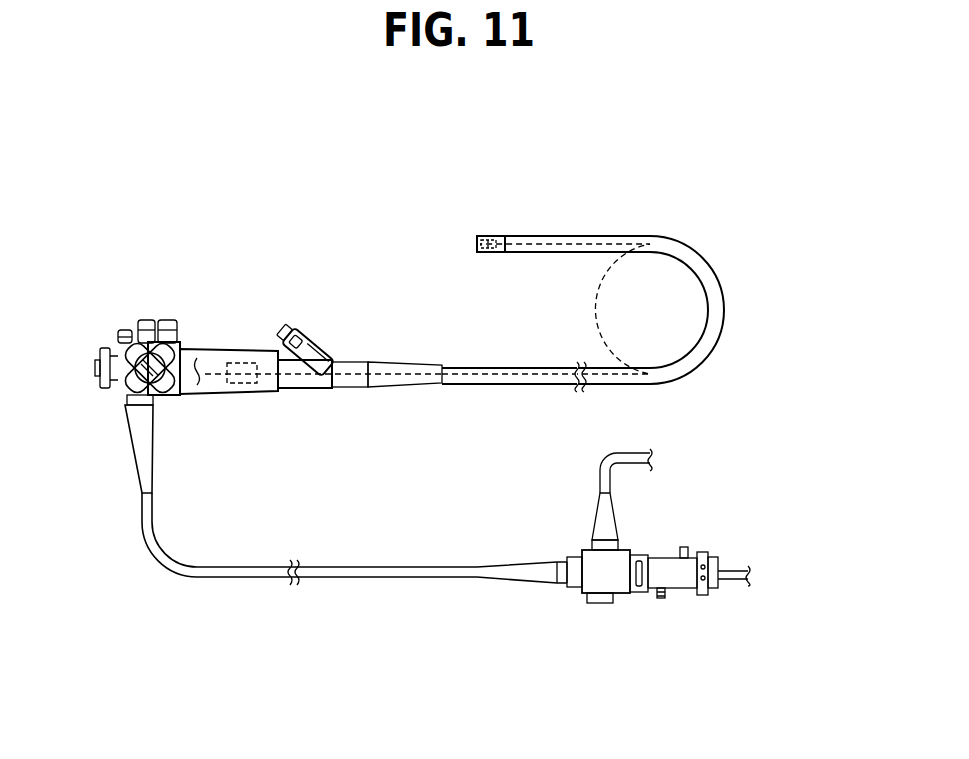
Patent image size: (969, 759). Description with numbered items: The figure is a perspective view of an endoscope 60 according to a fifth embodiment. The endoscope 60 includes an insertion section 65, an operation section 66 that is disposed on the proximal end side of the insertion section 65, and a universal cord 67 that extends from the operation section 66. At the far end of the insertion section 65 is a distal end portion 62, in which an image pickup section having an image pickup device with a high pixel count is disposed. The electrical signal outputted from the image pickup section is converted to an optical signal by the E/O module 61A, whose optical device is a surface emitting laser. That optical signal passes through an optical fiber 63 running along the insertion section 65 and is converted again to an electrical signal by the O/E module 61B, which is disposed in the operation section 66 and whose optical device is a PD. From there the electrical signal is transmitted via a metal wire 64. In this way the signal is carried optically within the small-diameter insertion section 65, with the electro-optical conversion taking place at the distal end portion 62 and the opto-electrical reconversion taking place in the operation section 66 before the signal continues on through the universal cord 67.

The endoscope 60 is at (758, 190).
The E/O module 61A is at (503, 238).
The O/E module 61B is at (240, 363).
The distal end portion 62 is at (485, 238).
The optical fiber 63 is at (603, 236).
The metal wire 64 is at (205, 393).
The insertion section 65 is at (724, 303).
The operation section 66 is at (220, 350).
The universal cord 67 is at (247, 567).